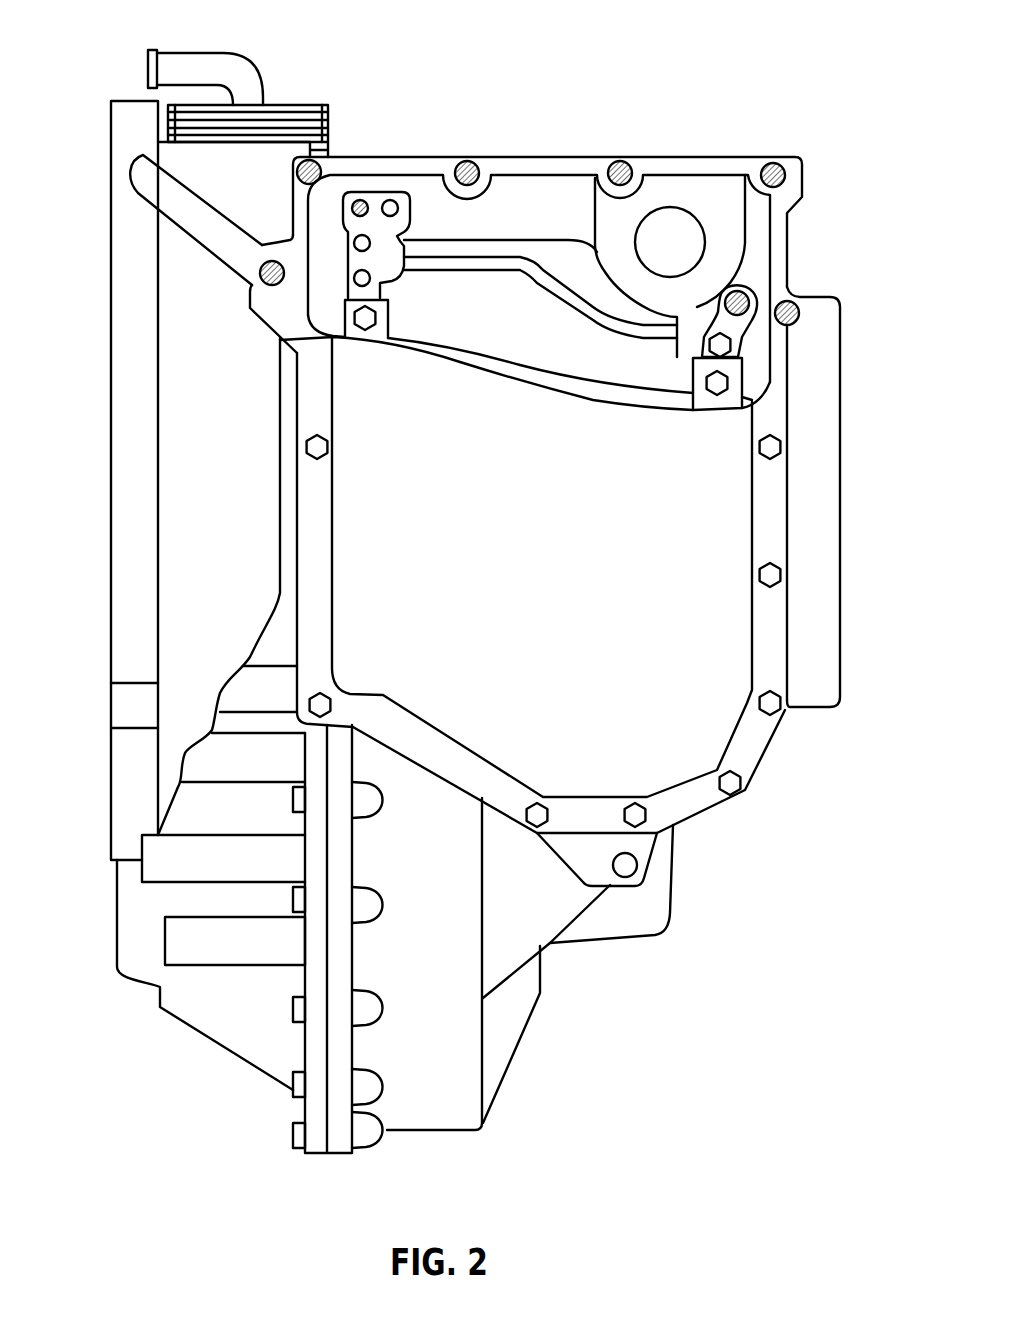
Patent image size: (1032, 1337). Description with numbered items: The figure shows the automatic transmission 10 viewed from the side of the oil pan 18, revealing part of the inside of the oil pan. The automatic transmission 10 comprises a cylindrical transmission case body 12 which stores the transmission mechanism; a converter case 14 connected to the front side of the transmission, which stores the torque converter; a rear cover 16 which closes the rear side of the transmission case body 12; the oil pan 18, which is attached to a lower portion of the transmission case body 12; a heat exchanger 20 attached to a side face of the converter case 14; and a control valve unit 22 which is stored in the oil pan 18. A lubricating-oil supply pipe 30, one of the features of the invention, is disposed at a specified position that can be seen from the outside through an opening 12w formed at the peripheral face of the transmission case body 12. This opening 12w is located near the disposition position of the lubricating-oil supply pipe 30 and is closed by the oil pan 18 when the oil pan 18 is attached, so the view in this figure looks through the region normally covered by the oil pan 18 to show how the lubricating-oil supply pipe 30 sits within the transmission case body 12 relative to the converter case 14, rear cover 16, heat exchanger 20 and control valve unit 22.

The automatic transmission 10 is at (699, 124).
The transmission case body 12 is at (602, 167).
The opening 12w is at (495, 195).
The converter case 14 is at (137, 520).
The rear cover 16 is at (830, 377).
The oil pan 18 is at (717, 712).
The heat exchanger 20 is at (290, 105).
The control valve unit 22 is at (518, 367).
The lubricating-oil supply pipe 30 is at (518, 265).